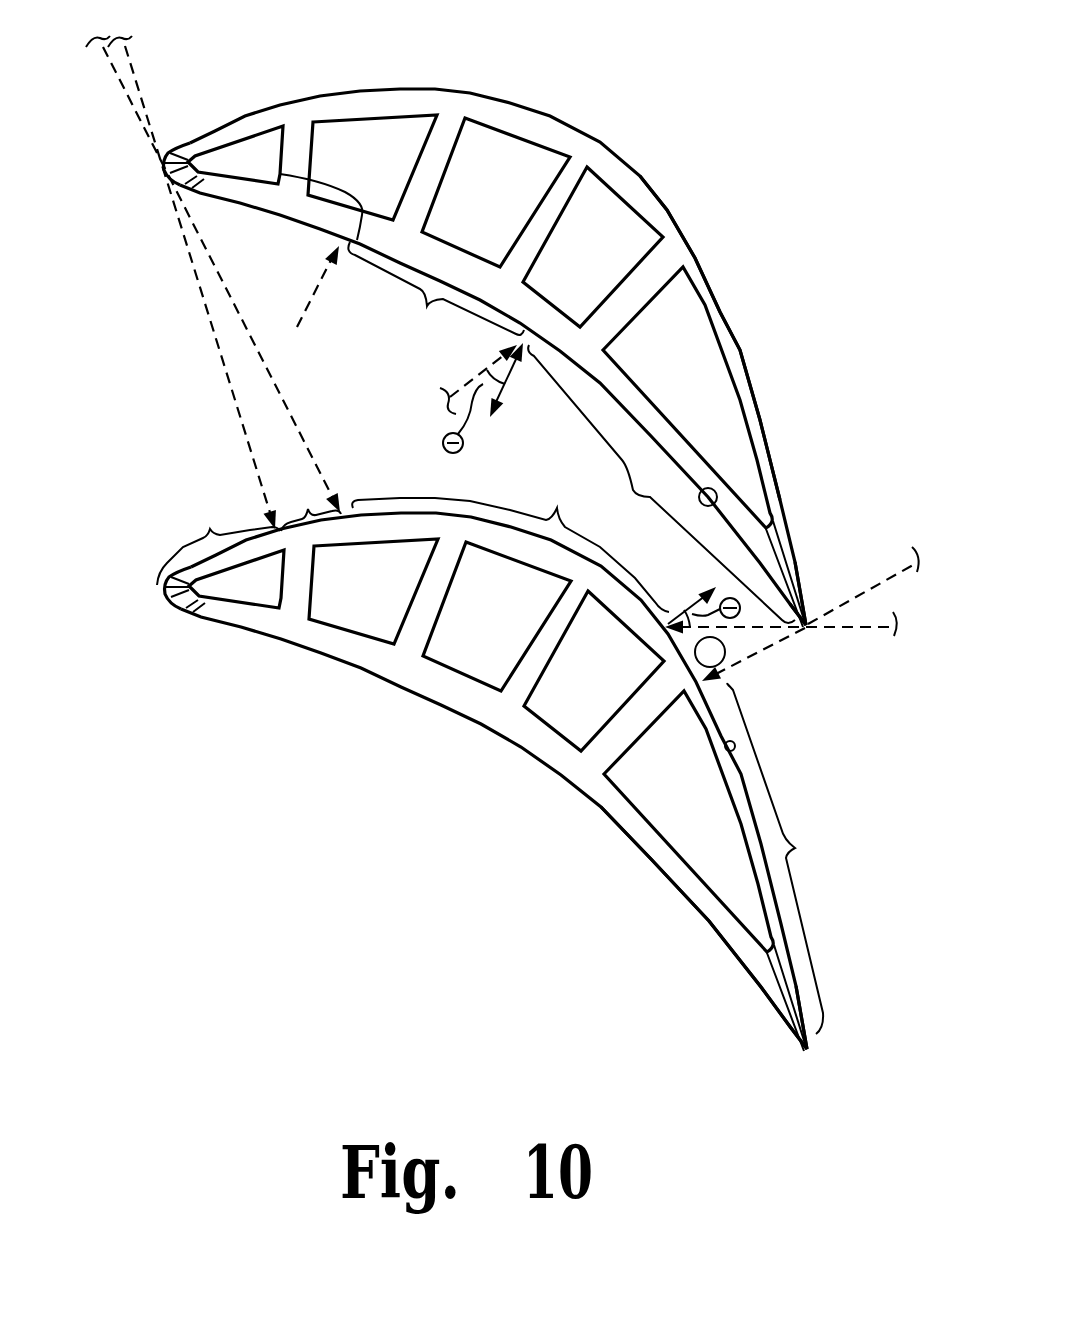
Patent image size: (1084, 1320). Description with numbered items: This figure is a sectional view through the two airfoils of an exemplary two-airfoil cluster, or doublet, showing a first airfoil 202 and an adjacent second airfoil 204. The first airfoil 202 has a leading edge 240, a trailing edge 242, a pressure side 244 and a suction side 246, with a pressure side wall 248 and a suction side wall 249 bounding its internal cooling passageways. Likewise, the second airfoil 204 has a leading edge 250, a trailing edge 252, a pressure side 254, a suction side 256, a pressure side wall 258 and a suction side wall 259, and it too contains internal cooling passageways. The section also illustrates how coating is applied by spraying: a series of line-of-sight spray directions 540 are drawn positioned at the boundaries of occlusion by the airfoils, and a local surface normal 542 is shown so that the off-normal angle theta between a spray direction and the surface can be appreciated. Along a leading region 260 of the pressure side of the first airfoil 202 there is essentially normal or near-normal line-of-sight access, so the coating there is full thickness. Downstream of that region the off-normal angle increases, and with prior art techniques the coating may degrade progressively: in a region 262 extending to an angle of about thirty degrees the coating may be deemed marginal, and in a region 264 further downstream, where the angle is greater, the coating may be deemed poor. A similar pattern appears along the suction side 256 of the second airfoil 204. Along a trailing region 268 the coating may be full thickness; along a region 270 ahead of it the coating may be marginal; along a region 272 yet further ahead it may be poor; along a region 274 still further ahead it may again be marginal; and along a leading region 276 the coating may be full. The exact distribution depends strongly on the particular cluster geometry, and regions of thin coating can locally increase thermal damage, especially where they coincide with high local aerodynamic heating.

The first airfoil 202 is at (469, 343).
The second airfoil 204 is at (489, 815).
The leading edge 240 is at (164, 167).
The trailing edge 242 is at (808, 628).
The pressure side 244 is at (708, 497).
The suction side 246 is at (738, 348).
The pressure side wall 248 is at (713, 300).
The suction side wall 249 is at (650, 408).
The leading edge 250 is at (178, 600).
The trailing edge 252 is at (807, 1052).
The pressure side 254 is at (644, 850).
The suction side 256 is at (726, 750).
The pressure side wall 258 is at (740, 946).
The suction side wall 259 is at (740, 816).
The leading region 260 is at (276, 168).
The region 262 is at (436, 298).
The region 264 is at (661, 484).
The trailing region 268 is at (786, 859).
The region 270 is at (728, 678).
The region 272 is at (510, 541).
The region 274 is at (213, 283).
The leading region 276 is at (218, 541).
The line-of-sight spray directions 540 is at (318, 288).
The local surface normal 542 is at (512, 388).